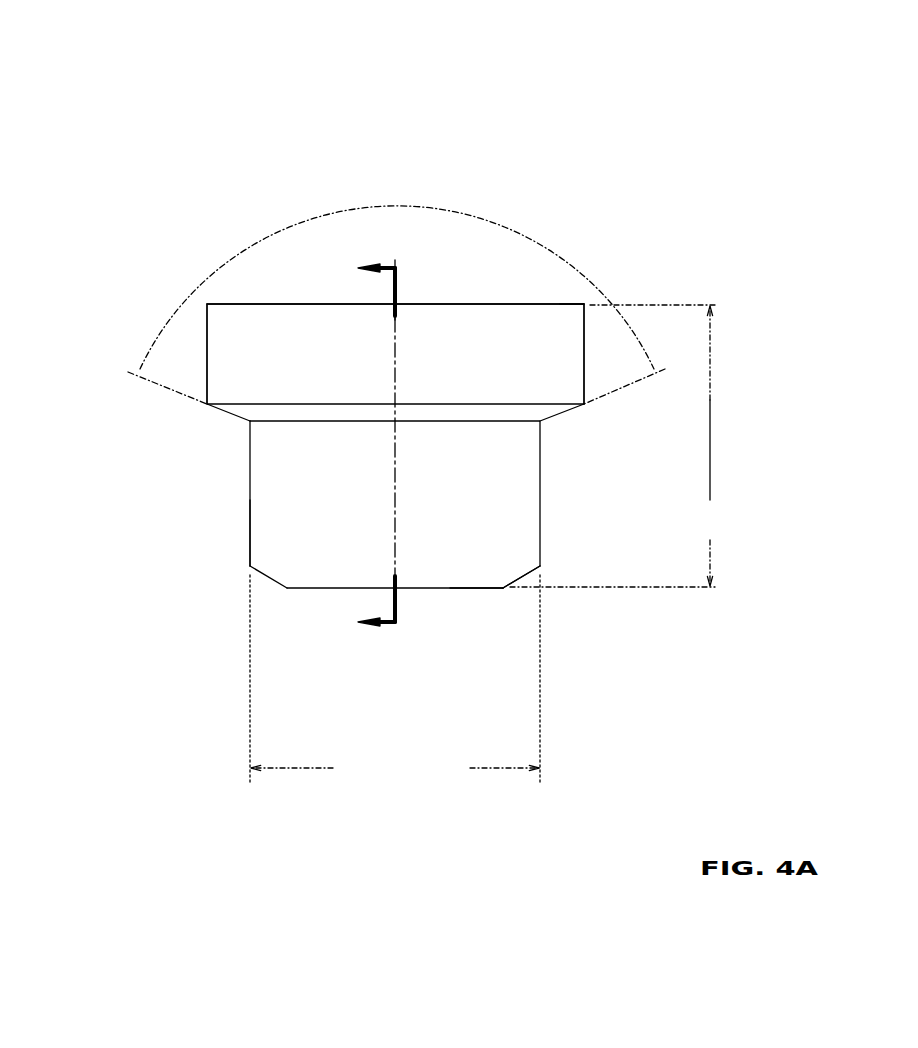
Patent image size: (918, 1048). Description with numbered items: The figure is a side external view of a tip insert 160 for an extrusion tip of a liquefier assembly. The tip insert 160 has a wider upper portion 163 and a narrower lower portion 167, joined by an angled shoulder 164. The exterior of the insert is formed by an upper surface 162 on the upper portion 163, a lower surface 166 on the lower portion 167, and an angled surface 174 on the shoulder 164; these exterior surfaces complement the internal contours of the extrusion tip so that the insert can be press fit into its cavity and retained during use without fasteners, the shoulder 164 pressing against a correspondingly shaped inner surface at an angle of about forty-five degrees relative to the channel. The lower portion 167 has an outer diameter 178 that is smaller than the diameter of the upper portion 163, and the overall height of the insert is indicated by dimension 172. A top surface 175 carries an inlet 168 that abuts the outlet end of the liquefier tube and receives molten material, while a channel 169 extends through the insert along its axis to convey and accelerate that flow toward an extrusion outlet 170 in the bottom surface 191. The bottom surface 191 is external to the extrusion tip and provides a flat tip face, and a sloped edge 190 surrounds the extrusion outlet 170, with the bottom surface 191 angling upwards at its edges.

The tip insert 160 is at (98, 68).
The upper surface 162 is at (205, 350).
The upper portion 163 is at (73, 358).
The angled shoulder 164 is at (225, 423).
The lower surface 166 is at (248, 514).
The lower portion 167 is at (68, 540).
The inlet 168 is at (438, 297).
The channel 169 is at (363, 253).
The extrusion outlet 170 is at (478, 600).
The overall length 172 is at (623, 446).
The angled surface 174 is at (220, 463).
The top surface 175 is at (583, 305).
The outer diameter 178 is at (395, 678).
The sloped edge 190 is at (265, 590).
The bottom surface 191 is at (497, 588).